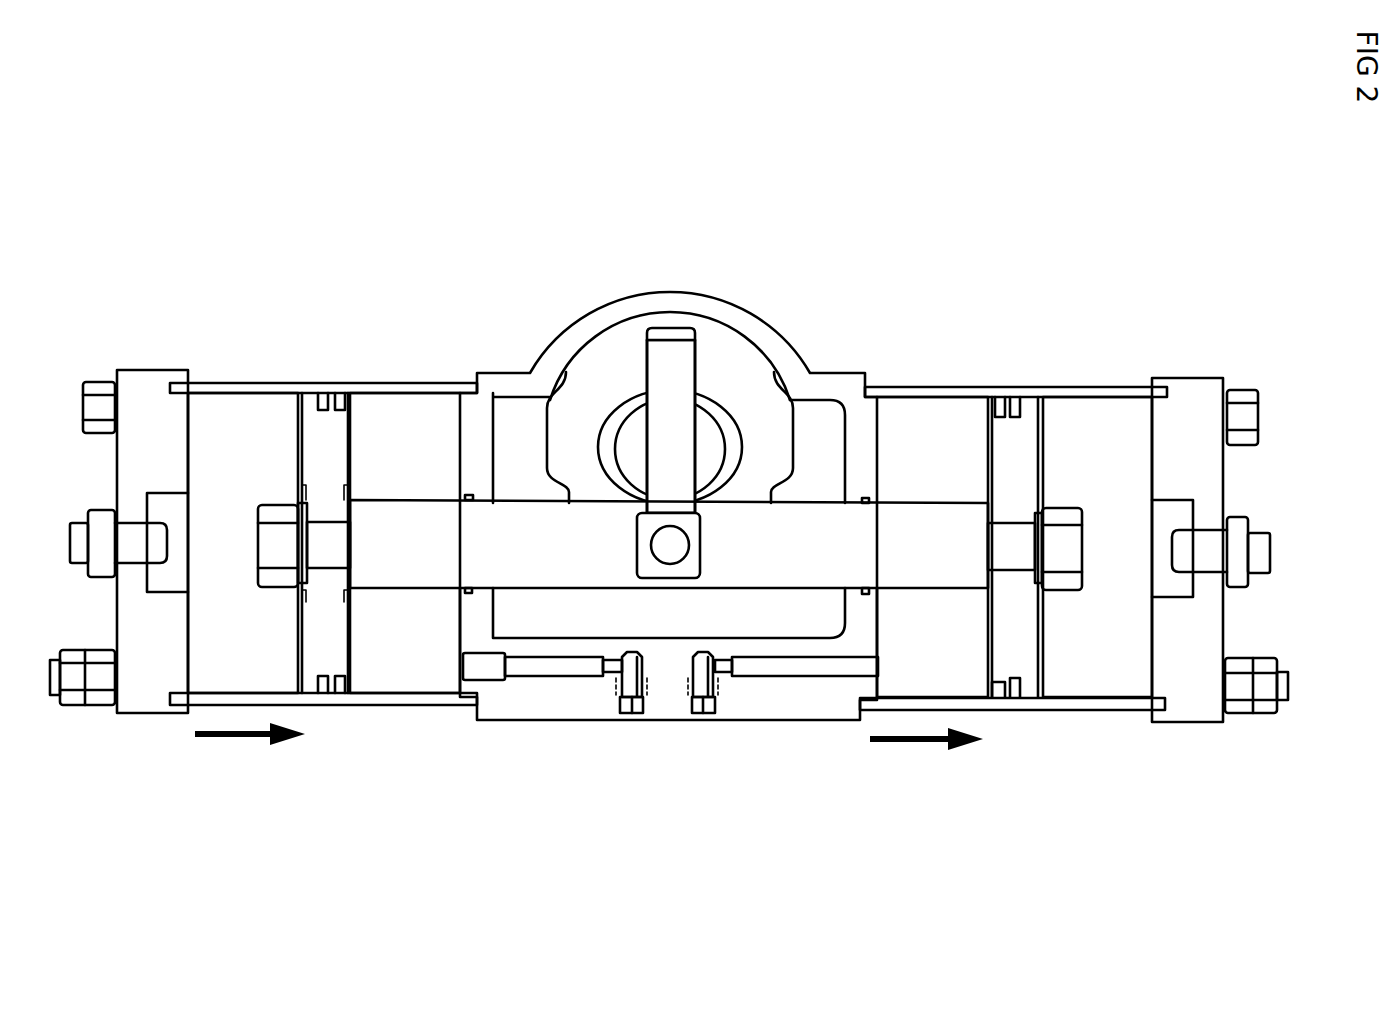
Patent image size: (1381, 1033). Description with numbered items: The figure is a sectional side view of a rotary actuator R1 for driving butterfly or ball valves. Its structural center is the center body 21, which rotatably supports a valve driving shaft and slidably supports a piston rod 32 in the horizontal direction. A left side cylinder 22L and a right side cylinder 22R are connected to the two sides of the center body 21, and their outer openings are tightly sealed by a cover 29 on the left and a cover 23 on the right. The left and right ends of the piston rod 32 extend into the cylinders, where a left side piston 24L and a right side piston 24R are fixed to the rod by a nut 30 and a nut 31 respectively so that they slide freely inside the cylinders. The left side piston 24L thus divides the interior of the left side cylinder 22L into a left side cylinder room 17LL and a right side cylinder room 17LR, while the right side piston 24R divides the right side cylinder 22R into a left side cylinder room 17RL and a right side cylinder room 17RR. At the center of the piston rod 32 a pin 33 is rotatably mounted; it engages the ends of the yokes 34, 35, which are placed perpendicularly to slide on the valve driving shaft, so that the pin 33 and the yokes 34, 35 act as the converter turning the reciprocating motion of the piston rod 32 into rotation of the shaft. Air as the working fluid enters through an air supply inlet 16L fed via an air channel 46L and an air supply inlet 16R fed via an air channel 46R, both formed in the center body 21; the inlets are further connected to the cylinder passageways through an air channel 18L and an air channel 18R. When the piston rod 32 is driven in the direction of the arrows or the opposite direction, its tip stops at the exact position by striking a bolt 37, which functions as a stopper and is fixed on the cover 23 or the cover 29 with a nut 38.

The rotary actuator R1 is at (268, 244).
The center body 21 is at (783, 353).
The yoke 34 is at (673, 345).
The yoke 35 is at (671, 426).
The piston rod 32 is at (427, 520).
The pin 33 is at (653, 540).
The cover 29 is at (148, 388).
The cover 23 is at (1185, 405).
The nut 38 is at (82, 517).
The bolt 37 is at (100, 577).
The left side cylinder 22L is at (407, 708).
The right side cylinder 22R is at (1050, 712).
The left side cylinder room 17LL is at (247, 420).
The right side cylinder room 17LR is at (396, 417).
The left side cylinder room 17RL is at (923, 428).
The right side cylinder room 17RR is at (1105, 427).
The left side piston 24L is at (312, 413).
The right side piston 24R is at (1035, 418).
The nut 30 is at (273, 580).
The nut 31 is at (1067, 508).
The air channel 46L is at (537, 680).
The air channel 46R is at (800, 680).
The air supply inlet 16L is at (640, 653).
The air supply inlet 16R is at (707, 653).
The air channel 18L is at (622, 717).
The air channel 18R is at (693, 717).